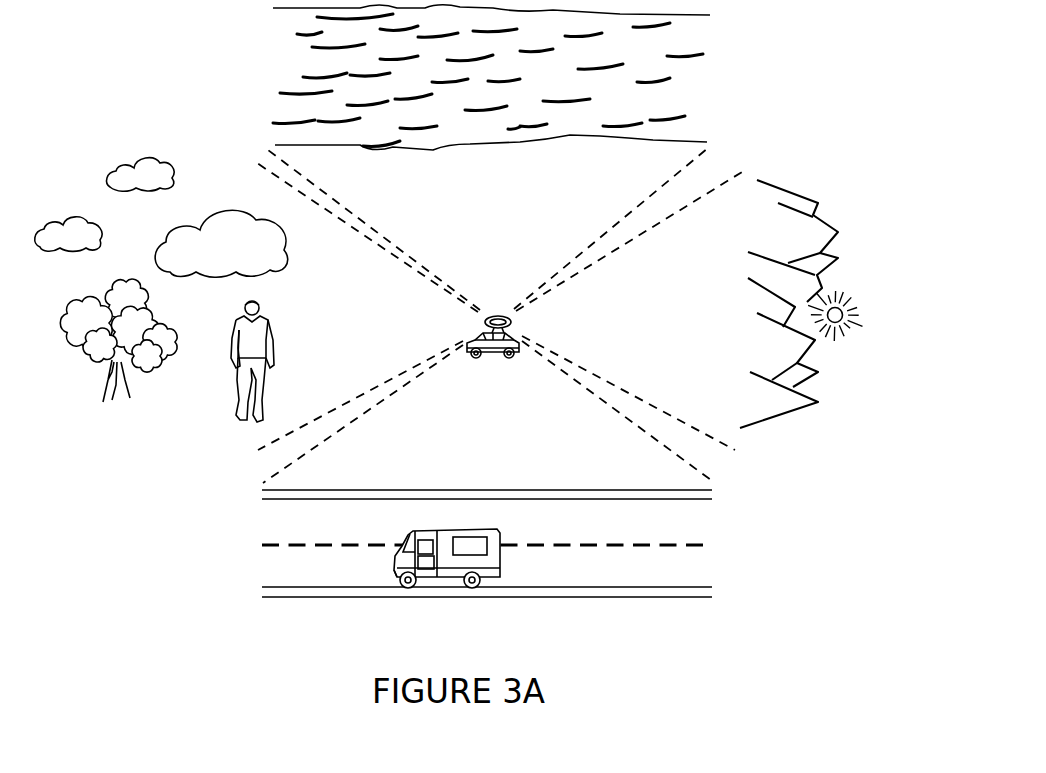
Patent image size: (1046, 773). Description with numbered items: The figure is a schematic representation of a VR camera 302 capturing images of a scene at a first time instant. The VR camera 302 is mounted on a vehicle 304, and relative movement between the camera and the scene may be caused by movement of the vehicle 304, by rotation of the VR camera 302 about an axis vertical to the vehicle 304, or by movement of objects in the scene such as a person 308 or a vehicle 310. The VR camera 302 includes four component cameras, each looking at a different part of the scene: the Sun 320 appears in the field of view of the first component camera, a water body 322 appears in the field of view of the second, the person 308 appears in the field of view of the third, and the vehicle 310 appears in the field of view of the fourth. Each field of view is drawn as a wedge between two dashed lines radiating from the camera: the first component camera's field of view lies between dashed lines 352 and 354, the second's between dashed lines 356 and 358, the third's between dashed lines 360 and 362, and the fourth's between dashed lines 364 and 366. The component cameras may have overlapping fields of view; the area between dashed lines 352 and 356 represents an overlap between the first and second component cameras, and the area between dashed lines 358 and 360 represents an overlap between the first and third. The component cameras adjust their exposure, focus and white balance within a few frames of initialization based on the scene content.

The VR camera 302 is at (494, 313).
The vehicle 304 is at (494, 364).
The person 308 is at (263, 392).
The vehicle 310 is at (501, 532).
The Sun 320 is at (838, 348).
The water body 322 is at (708, 86).
The dashed line 352 is at (652, 196).
The dashed line 354 is at (652, 438).
The dashed line 356 is at (694, 206).
The dashed line 358 is at (338, 225).
The dashed line 360 is at (338, 204).
The dashed line 362 is at (346, 429).
The dashed line 364 is at (369, 386).
The dashed line 366 is at (692, 426).